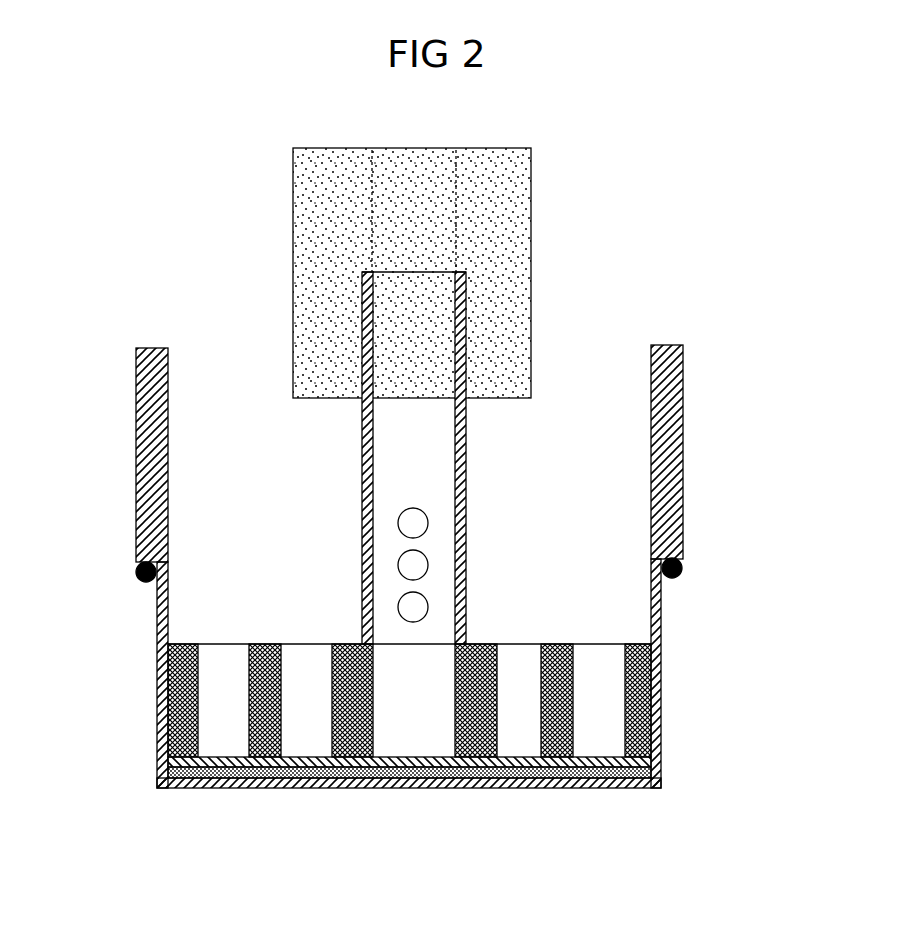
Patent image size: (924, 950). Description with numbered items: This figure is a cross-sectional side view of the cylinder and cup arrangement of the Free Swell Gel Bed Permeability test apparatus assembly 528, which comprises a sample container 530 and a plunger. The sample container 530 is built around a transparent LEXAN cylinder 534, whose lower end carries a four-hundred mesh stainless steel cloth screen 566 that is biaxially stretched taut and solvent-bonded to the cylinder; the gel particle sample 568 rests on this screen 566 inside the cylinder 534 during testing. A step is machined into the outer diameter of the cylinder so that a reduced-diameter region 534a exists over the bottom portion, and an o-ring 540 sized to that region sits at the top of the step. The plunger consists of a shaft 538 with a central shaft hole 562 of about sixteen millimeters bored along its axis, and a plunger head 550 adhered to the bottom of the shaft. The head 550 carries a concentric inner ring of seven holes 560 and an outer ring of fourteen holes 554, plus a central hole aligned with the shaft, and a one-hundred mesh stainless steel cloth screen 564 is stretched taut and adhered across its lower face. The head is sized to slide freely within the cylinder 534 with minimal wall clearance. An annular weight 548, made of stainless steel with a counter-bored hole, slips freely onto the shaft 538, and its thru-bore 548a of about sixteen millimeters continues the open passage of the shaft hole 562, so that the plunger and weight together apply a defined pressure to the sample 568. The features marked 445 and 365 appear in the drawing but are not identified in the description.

The test apparatus assembly 528 is at (683, 218).
The annular weight 548 is at (517, 148).
The thru-bore 548a is at (455, 167).
The shaft 538 is at (362, 418).
The balls 445 is at (420, 510).
The tube interior 365 is at (477, 527).
The cylinder 534 is at (136, 368).
The sample container 530 is at (765, 485).
The o-ring 540 is at (127, 563).
The region 534a is at (672, 630).
The outer ring of holes 554 is at (220, 717).
The plunger head 550 is at (657, 678).
The stainless steel cloth screen 564 is at (657, 730).
The stainless steel cloth screen 566 is at (500, 783).
The gel particle sample 568 is at (660, 783).
The inner ring of holes 560 is at (302, 727).
The shaft hole 562 is at (403, 737).